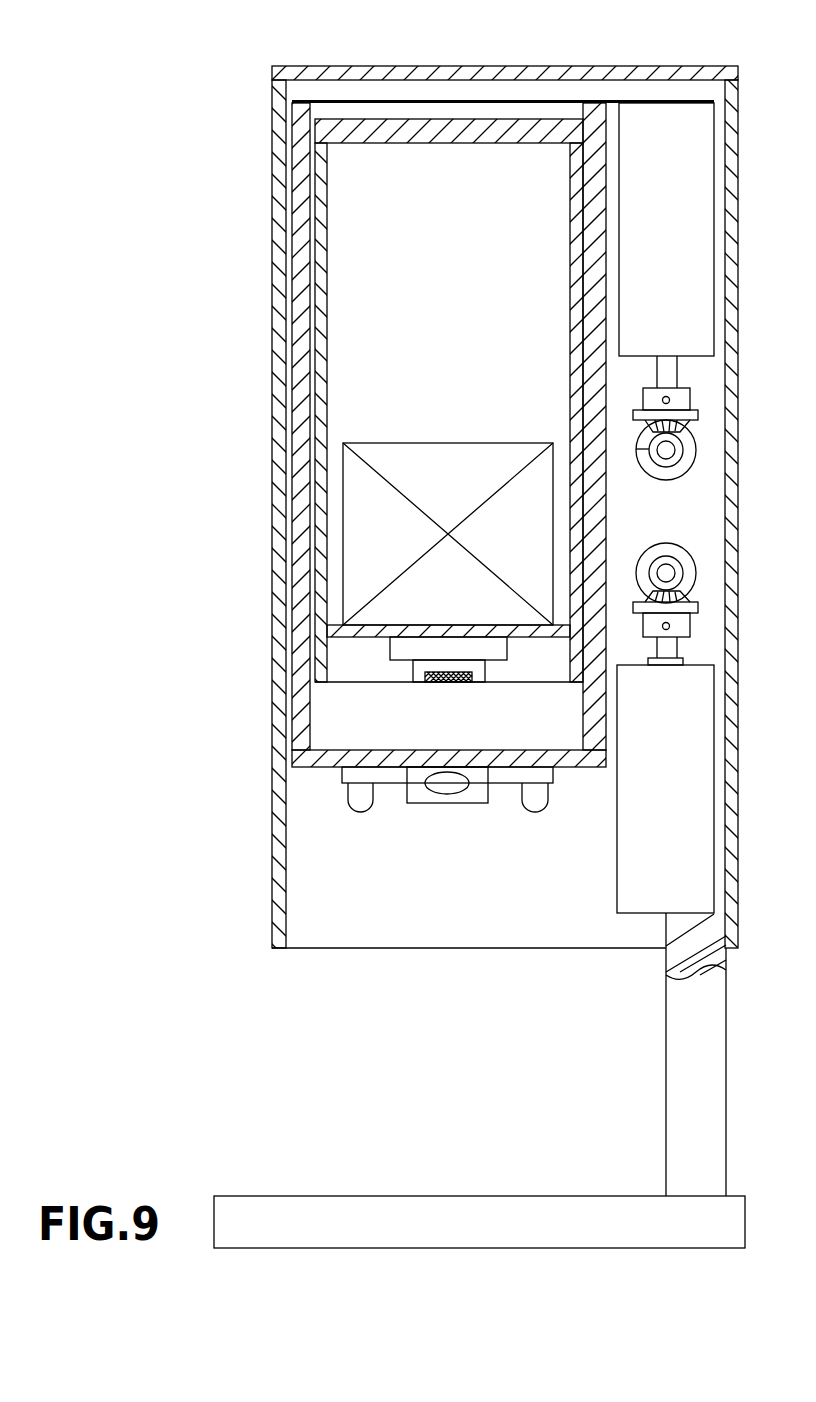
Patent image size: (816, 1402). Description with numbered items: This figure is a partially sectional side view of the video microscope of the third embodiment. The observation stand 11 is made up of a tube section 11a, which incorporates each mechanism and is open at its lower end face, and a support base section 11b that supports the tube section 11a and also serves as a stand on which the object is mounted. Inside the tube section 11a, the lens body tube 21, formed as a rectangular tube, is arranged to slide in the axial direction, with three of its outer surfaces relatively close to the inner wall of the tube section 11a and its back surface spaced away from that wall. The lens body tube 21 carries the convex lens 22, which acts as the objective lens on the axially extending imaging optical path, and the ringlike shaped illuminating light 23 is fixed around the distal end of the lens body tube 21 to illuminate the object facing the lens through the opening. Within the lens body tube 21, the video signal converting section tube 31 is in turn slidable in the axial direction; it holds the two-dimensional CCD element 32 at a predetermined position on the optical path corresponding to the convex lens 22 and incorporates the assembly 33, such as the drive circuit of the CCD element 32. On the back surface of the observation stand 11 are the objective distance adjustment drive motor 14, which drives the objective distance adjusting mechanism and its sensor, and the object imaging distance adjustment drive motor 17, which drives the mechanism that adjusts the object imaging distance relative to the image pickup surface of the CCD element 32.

The observation stand 11 is at (170, 1054).
The tube section 11a is at (272, 917).
The support base section 11b is at (267, 1193).
The objective distance adjustment drive motor 14 is at (633, 883).
The object imaging distance adjustment drive motor 17 is at (643, 128).
The lens body tube 21 is at (300, 283).
The convex lens 22 is at (443, 788).
The illuminating light 23 is at (535, 808).
The video signal converting section tube 31 is at (317, 182).
The two-dimensional CCD element 32 is at (430, 682).
The assembly 33 is at (428, 453).